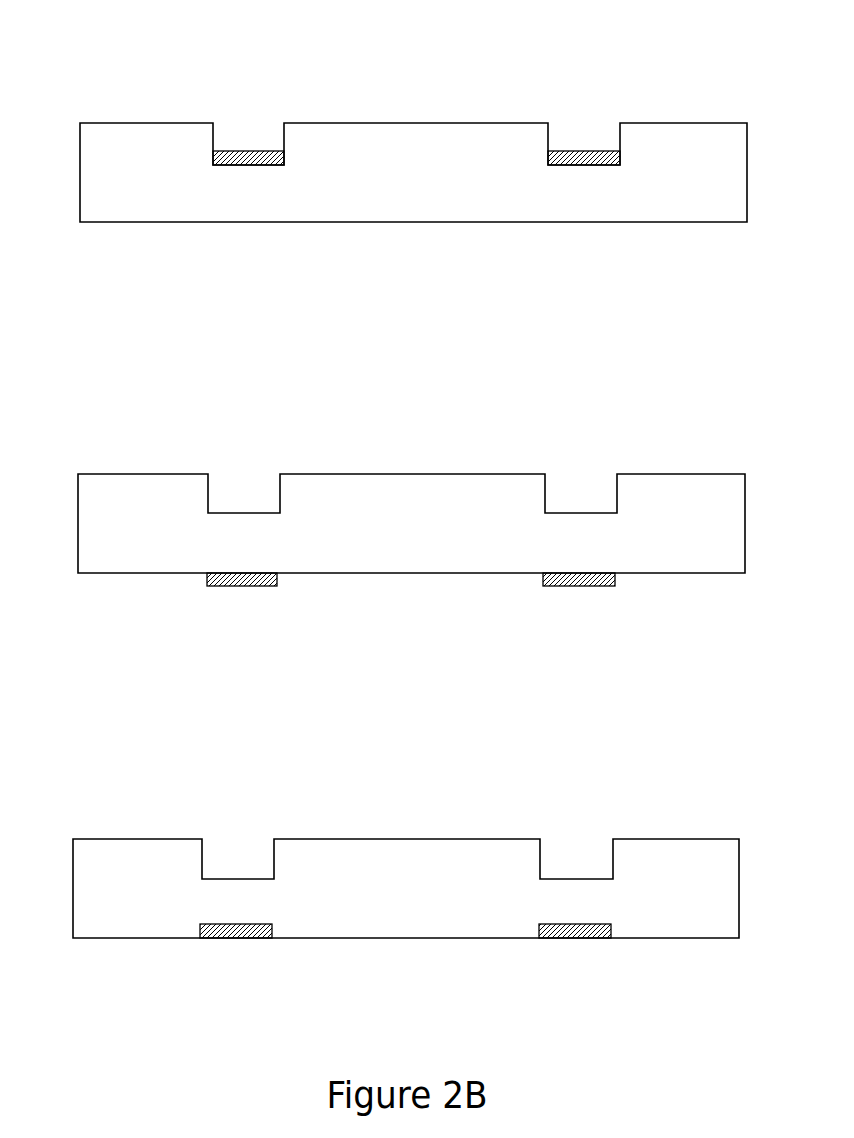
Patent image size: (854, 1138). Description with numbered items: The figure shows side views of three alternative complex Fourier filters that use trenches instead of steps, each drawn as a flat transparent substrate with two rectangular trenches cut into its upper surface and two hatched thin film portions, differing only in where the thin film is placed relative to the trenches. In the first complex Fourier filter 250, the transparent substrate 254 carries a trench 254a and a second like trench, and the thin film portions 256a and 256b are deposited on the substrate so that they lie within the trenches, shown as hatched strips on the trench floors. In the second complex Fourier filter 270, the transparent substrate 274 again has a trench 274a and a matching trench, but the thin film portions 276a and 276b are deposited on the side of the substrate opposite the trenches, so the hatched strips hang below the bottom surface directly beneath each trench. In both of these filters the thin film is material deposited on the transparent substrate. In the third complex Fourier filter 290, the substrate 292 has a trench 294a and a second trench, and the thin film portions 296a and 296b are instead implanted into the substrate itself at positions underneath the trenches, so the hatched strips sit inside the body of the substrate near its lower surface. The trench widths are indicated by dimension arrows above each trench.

The complex Fourier filter 250 is at (631, 64).
The transparent substrate 254 is at (97, 123).
The trench 254a is at (222, 110).
The thin film portion 256a is at (243, 166).
The thin film portion 256b is at (572, 167).
The complex Fourier filter 270 is at (618, 405).
The transparent substrate 274 is at (95, 473).
The trench 274a is at (218, 464).
The thin film portion 276a is at (230, 586).
The thin film portion 276b is at (560, 588).
The complex Fourier filter 290 is at (605, 785).
The substrate 292 is at (90, 838).
The trench 294a is at (211, 828).
The thin film portion 296a is at (230, 934).
The thin film portion 296b is at (567, 934).